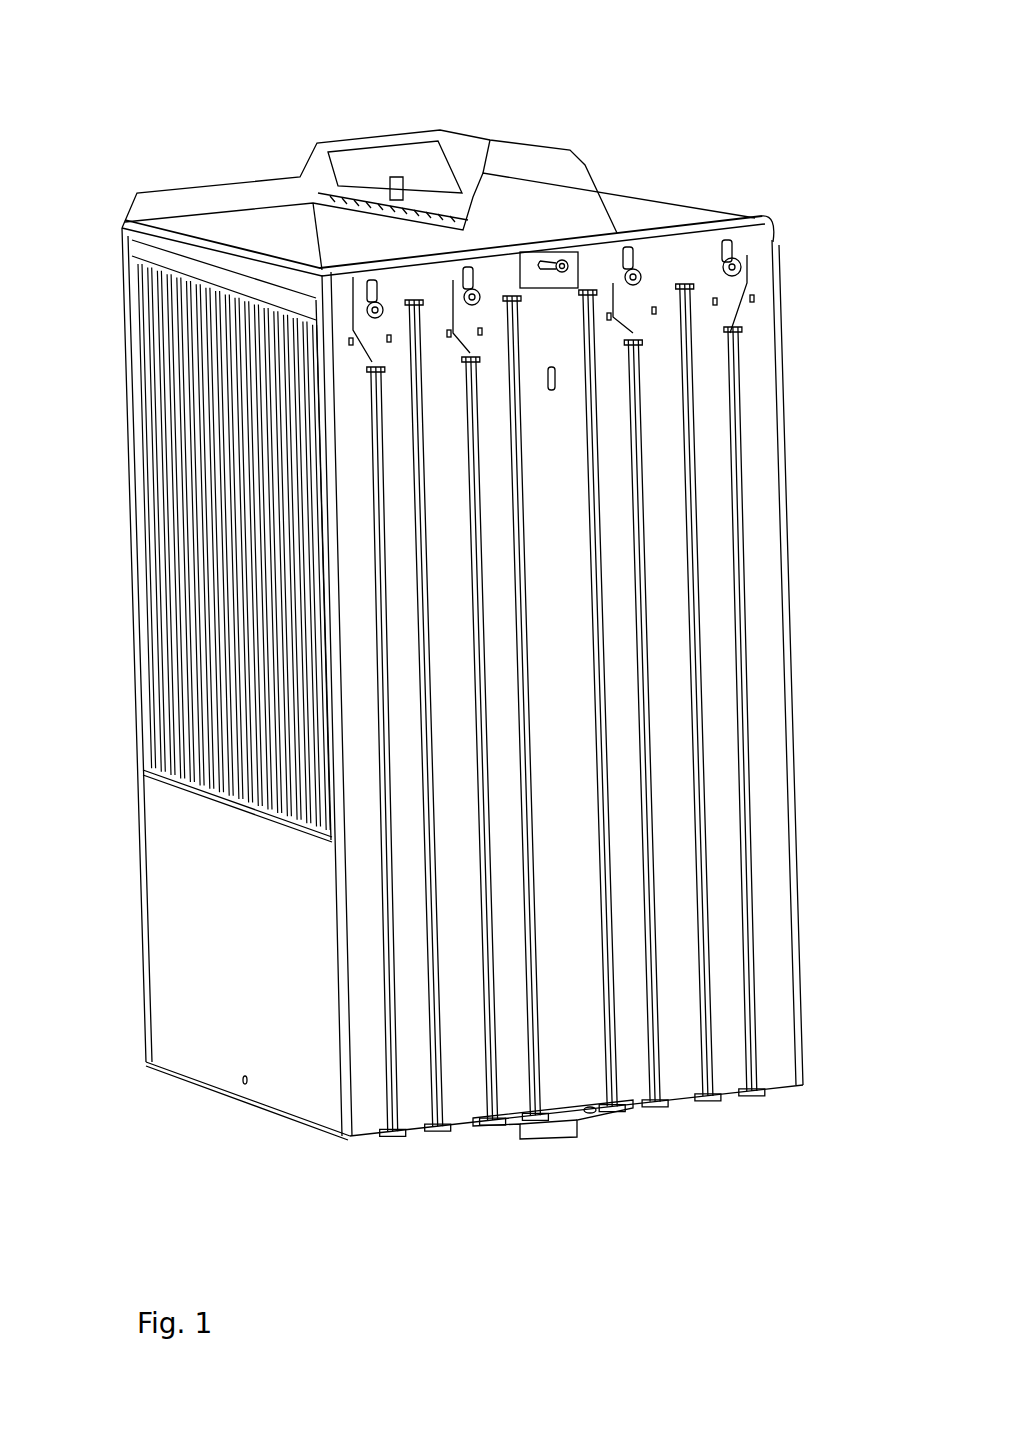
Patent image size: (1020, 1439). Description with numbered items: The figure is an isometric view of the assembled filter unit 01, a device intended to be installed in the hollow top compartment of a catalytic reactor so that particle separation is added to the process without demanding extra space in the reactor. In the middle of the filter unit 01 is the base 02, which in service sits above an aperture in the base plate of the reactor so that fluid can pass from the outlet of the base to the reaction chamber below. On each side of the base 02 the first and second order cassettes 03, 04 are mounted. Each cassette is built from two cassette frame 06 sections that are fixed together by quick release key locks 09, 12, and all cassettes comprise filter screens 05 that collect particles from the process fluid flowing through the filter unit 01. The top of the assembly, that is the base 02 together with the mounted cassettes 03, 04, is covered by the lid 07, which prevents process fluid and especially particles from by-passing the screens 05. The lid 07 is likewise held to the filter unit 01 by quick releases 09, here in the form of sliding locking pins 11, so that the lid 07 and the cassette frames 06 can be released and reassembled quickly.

The filter unit 01 is at (120, 98).
The base 02 is at (565, 507).
The first order cassette 03 is at (662, 1108).
The second order cassette 04 is at (742, 1103).
The screen 05 is at (242, 462).
The cassette frame 06 is at (778, 977).
The lid 07 is at (277, 245).
The quick release 09 is at (551, 202).
The locking pin 11 is at (557, 262).
The key 12 is at (377, 297).